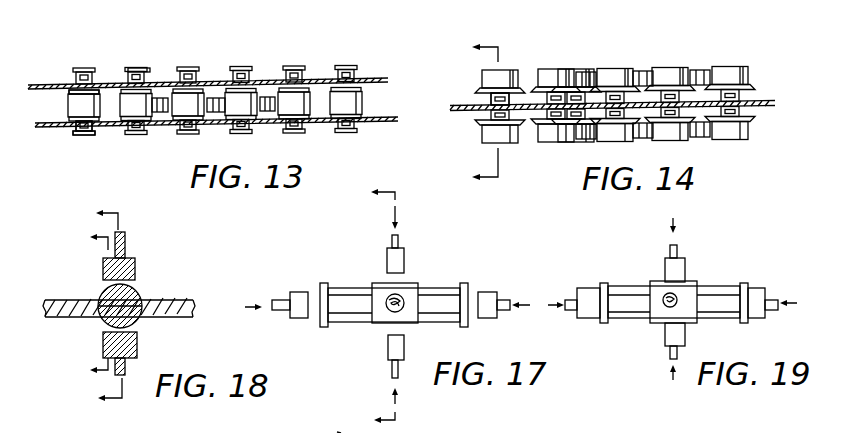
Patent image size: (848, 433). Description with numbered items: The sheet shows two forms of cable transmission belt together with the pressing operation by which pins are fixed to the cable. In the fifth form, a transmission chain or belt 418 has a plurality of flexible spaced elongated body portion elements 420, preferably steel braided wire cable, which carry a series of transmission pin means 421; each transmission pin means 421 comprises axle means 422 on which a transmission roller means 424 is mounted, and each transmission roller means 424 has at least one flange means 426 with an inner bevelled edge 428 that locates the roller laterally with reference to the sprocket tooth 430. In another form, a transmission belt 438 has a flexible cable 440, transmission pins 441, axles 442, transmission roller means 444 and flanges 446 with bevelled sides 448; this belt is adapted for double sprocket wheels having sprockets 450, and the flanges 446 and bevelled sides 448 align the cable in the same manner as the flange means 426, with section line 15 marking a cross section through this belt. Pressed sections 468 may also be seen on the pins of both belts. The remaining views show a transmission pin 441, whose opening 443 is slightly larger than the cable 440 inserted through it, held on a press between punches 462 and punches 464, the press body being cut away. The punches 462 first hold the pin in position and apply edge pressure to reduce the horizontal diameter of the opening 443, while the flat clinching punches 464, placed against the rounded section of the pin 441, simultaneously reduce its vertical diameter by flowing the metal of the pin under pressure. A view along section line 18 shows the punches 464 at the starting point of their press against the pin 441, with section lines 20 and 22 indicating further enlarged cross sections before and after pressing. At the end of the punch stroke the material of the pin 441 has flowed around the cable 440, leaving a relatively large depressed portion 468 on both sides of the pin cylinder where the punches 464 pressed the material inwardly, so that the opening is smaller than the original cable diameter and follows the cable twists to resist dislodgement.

In FIG. 14, the section line 15- 15 is at (494, 112).
In FIG. 17, the section line 18— 18 is at (406, 307).
In FIG. 18, the section line 20— 20 is at (115, 307).
In FIG. 18, the section line 22— 22 is at (87, 304).
In FIG. 13, the transmission chain or belt 418 is at (137, 56).
In FIG. 13, the flexible spaced elongated body portion elements 420 is at (222, 82).
In FIG. 13, the transmission pin means 421 is at (73, 70).
In FIG. 13, the axle means 422 is at (180, 94).
In FIG. 13, the transmission roller means 424 is at (76, 104).
In FIG. 13, the flange means 426 is at (73, 88).
In FIG. 13, the inner bevelled edge 428 is at (107, 84).
In FIG. 13, the sprocket tooth 430 is at (215, 82).
In FIG. 14, the transmission belt 438 is at (597, 58).
In FIG. 14, the flexible cable 440 is at (528, 103).
In FIG. 18, the flexible cable 440 is at (162, 300).
In FIG. 17, the flexible cable 440 is at (390, 293).
In FIG. 19, the flexible cable 440 is at (670, 297).
In FIG. 14, the transmission pin 441 is at (527, 120).
In FIG. 18, the transmission pin 441 is at (135, 290).
In FIG. 17, the transmission pin 441 is at (444, 287).
In FIG. 19, the transmission pin 441 is at (722, 283).
In FIG. 14, the axles 442 is at (733, 141).
In FIG. 18, the opening 443 is at (95, 318).
In FIG. 14, the transmission roller means 444 is at (553, 136).
In FIG. 14, the flanges 446 is at (482, 92).
In FIG. 14, the bevelled sides 448 is at (480, 121).
In FIG. 14, the sprockets 450 is at (642, 71).
In FIG. 17, the punches 462 is at (300, 292).
In FIG. 19, the punches 462 is at (590, 288).
In FIG. 18, the punches 464 is at (103, 265).
In FIG. 17, the punches 464 is at (405, 262).
In FIG. 19, the punches 464 is at (685, 268).
In FIG. 13, the depressed portion 468 is at (76, 128).
In FIG. 17, the depressed portion 468 is at (337, 432).
In FIG. 19, the depressed portion 468 is at (700, 424).